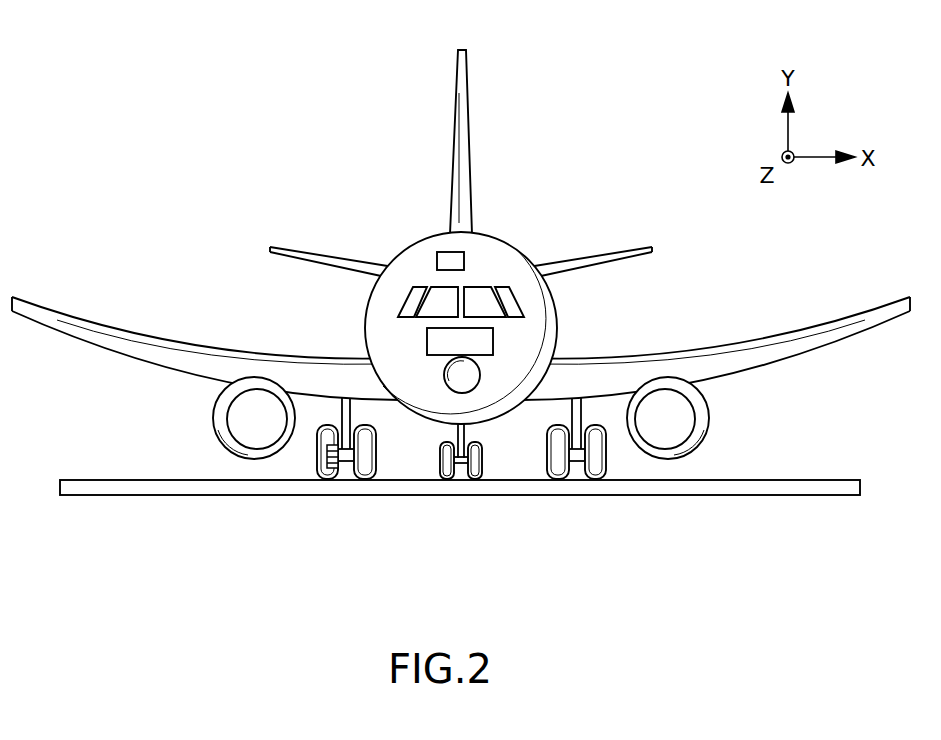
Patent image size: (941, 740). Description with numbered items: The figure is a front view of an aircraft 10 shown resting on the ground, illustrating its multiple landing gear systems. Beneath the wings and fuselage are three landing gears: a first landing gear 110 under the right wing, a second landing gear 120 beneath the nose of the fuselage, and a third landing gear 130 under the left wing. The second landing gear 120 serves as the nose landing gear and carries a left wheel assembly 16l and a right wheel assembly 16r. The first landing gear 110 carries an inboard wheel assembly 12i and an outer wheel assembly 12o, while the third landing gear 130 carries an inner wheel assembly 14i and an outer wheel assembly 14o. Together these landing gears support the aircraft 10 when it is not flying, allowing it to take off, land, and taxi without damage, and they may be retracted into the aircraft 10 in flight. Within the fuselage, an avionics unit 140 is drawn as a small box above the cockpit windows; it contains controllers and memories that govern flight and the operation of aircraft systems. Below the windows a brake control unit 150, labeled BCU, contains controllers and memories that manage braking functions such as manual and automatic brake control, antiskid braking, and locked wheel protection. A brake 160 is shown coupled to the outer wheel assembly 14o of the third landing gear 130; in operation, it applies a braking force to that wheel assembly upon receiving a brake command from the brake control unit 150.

The aircraft 10 is at (291, 88).
The first landing gear 110 is at (579, 425).
The second landing gear 120 is at (464, 444).
The third landing gear 130 is at (348, 428).
The avionics unit 140 is at (465, 257).
The brake control unit (BCU) 150 is at (495, 343).
The brake 160 is at (333, 467).
The inboard wheel assembly 12i is at (552, 480).
The outer wheel assembly 12o is at (612, 468).
The inner wheel assembly 14i is at (375, 480).
The outer wheel assembly 14o is at (331, 480).
The left wheel assembly 16l is at (487, 466).
The right wheel assembly 16r is at (449, 480).